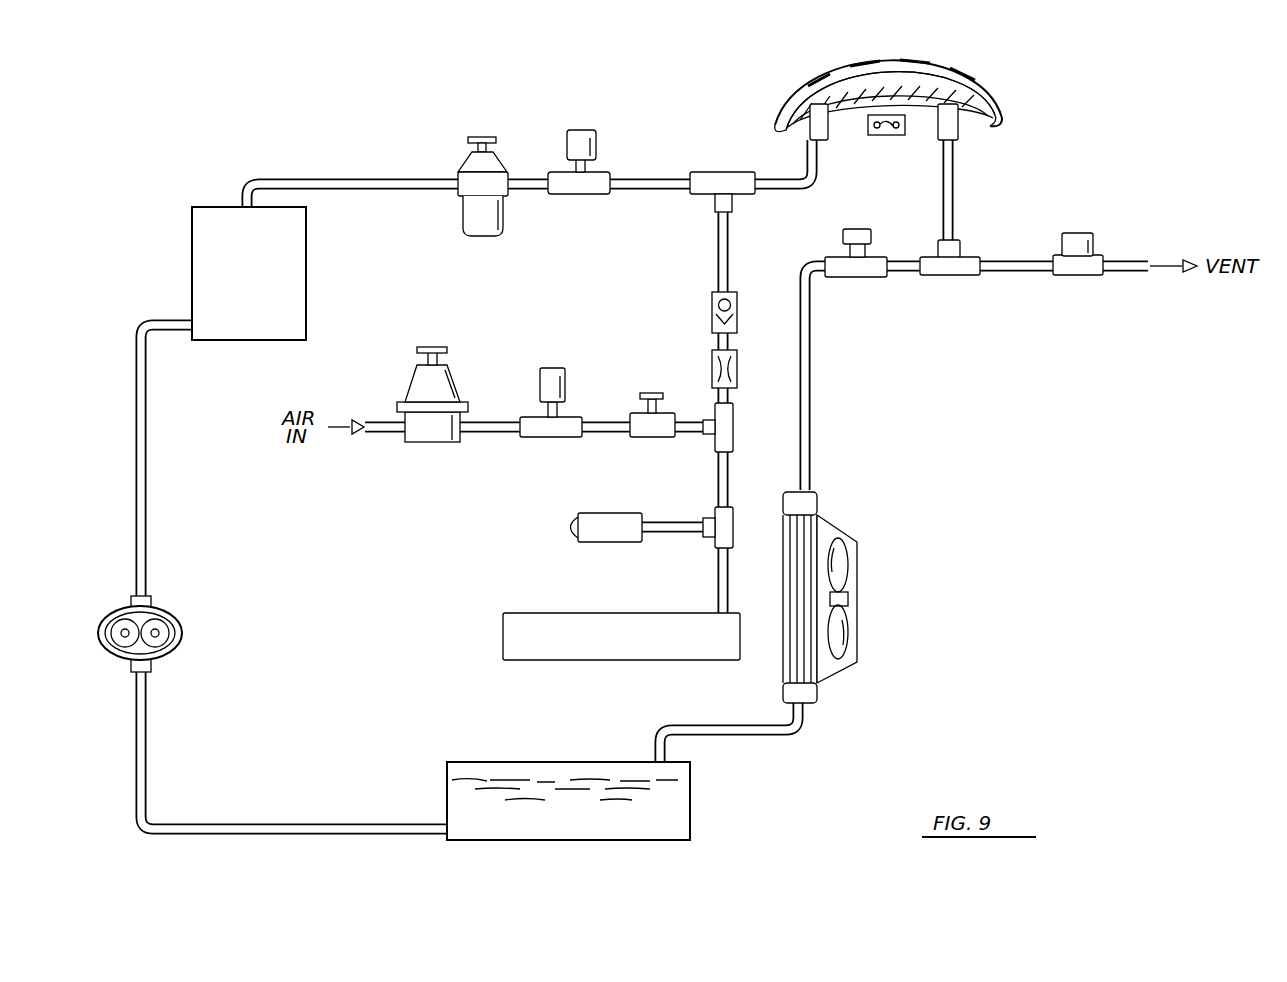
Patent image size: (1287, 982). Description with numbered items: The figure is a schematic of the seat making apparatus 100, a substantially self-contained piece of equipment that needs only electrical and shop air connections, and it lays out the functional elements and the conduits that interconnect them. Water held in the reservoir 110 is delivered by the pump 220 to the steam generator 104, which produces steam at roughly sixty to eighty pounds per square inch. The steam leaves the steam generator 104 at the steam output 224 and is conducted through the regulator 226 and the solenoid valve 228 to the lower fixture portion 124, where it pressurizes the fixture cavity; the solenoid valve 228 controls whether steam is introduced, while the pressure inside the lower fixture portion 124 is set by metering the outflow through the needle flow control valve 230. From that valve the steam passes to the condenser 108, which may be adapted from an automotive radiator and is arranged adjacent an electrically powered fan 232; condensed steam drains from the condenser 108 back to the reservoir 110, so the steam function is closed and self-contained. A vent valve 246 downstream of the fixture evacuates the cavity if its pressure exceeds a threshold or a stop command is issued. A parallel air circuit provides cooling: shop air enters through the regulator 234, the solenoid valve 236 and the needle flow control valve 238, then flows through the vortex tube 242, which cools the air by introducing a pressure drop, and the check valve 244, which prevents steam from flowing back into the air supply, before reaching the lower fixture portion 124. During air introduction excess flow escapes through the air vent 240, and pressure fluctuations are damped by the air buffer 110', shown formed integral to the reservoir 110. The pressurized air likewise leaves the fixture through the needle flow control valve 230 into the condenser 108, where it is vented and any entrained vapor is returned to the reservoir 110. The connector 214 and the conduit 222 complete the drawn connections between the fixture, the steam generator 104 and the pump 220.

The apparatus 100 is at (1047, 491).
The steam generator 104 is at (307, 272).
The condenser 108 is at (815, 506).
The reservoir 110 is at (568, 825).
The air buffer 110' is at (569, 636).
The lower fixture portion 124 is at (1000, 84).
The connector 214 is at (890, 136).
The pump 220 is at (175, 615).
The conduit 222 is at (190, 335).
The steam output 224 is at (243, 205).
The regulator 226 is at (483, 238).
The solenoid valve 228 is at (607, 172).
The needle flow control valve 230 is at (873, 278).
The fan 232 is at (845, 645).
The regulator 234 is at (435, 437).
The solenoid valve 236 is at (553, 437).
The needle flow control valve 238 is at (653, 437).
The air vent 240 is at (606, 543).
The vortex tube 242 is at (712, 362).
The check valve 244 is at (712, 313).
The vent valve 246 is at (1080, 276).